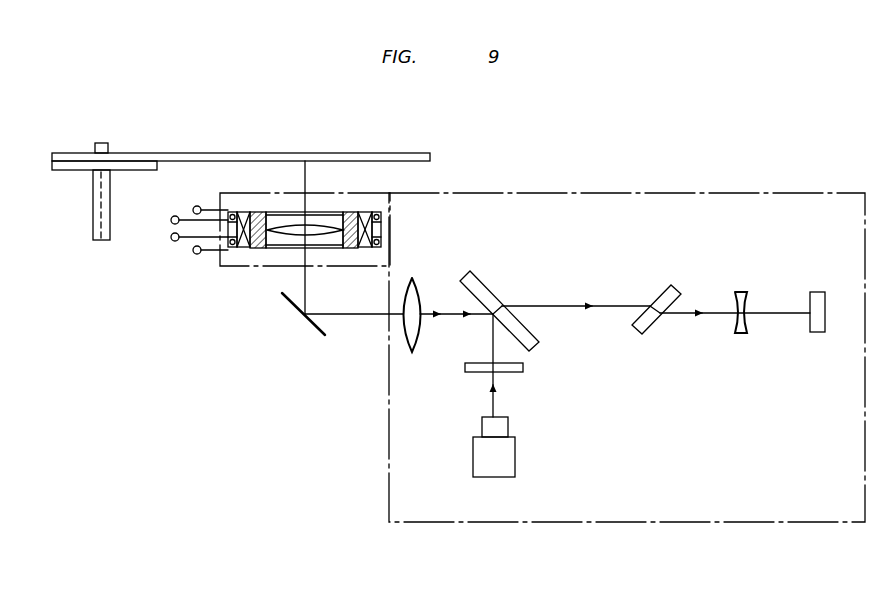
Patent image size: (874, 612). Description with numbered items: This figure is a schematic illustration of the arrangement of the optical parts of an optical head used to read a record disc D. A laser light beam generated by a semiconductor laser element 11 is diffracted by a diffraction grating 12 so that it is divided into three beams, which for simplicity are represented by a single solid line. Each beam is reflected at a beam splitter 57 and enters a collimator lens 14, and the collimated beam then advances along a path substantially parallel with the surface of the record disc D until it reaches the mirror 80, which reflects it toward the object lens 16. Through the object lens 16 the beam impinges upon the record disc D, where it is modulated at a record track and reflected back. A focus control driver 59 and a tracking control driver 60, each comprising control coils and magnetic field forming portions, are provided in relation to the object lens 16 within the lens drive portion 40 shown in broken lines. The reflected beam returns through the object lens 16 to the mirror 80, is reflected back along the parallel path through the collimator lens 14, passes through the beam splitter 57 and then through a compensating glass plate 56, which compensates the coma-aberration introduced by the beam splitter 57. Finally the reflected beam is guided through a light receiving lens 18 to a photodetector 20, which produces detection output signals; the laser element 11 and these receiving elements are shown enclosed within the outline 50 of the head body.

The record disc D is at (222, 150).
The semiconductor laser element 11 is at (513, 458).
The diffraction grating 12 is at (524, 370).
The collimator lens 14 is at (411, 276).
The object lens 16 is at (313, 234).
The light receiving lens 18 is at (734, 296).
The photodetector 20 is at (818, 334).
The lens drive unit 40 is at (240, 268).
The optical head housing 50 is at (441, 524).
The compensating glass plate 56 is at (661, 297).
The beam splitter 57 is at (491, 294).
The focus control driver 59 is at (244, 212).
The tracking control driver 60 is at (229, 213).
The mirror 80 is at (312, 328).